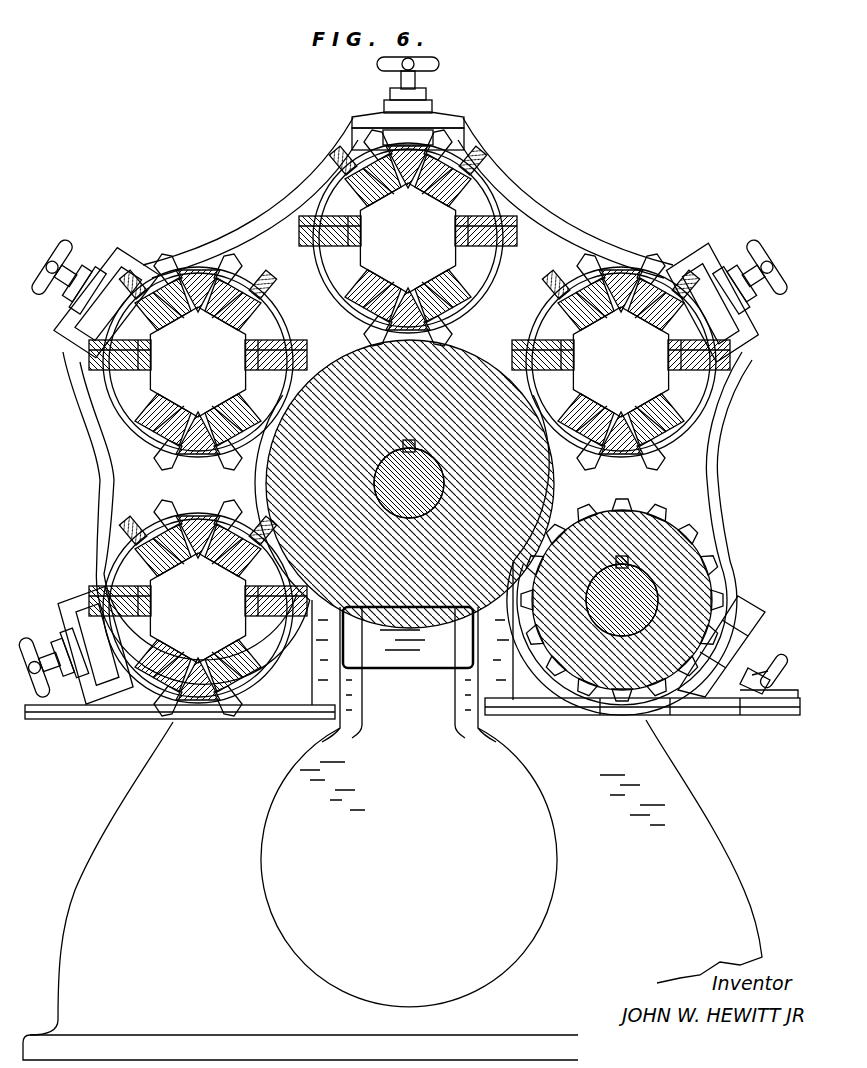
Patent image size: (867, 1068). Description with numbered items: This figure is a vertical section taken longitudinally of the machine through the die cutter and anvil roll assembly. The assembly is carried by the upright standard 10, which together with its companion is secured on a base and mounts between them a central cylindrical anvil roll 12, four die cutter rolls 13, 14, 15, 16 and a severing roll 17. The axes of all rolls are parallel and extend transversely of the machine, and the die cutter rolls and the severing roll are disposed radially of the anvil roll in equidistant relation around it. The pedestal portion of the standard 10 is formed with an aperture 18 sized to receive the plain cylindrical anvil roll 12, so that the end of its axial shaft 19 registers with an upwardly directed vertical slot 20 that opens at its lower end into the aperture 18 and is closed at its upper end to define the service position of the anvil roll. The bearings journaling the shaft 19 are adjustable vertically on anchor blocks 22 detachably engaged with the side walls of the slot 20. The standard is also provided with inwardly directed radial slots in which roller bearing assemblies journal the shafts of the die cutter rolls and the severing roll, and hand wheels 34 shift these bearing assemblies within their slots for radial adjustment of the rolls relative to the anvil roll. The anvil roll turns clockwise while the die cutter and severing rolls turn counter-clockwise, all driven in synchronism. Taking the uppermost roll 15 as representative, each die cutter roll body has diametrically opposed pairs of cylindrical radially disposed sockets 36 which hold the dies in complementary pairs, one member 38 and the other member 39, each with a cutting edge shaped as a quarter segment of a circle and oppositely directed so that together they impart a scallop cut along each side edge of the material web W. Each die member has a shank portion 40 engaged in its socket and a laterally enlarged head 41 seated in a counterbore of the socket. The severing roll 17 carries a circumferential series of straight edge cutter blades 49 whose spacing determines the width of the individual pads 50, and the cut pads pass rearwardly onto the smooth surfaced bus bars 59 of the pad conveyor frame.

The upright standard 10 is at (545, 238).
The anvil roll 12 is at (462, 365).
The die cutter roll 13 is at (110, 640).
The die cutter roll 14 is at (200, 262).
The die cutter roll 15 is at (418, 238).
The die cutter roll 16 is at (700, 408).
The severing roll 17 is at (695, 545).
The aperture 18 is at (525, 920).
The axial shaft 19 is at (447, 490).
The vertical slot 20 is at (396, 705).
The anchor block 22 is at (416, 668).
The hand wheel 34 is at (440, 62).
The socket 36 is at (435, 135).
The die member 38 is at (345, 165).
The die member 39 is at (478, 160).
The shank portion 40 is at (360, 135).
The head 41 is at (350, 190).
The cutter blade 49 is at (720, 600).
The pad 50 is at (735, 718).
The bus bar 59 is at (780, 718).
The material web W is at (48, 720).